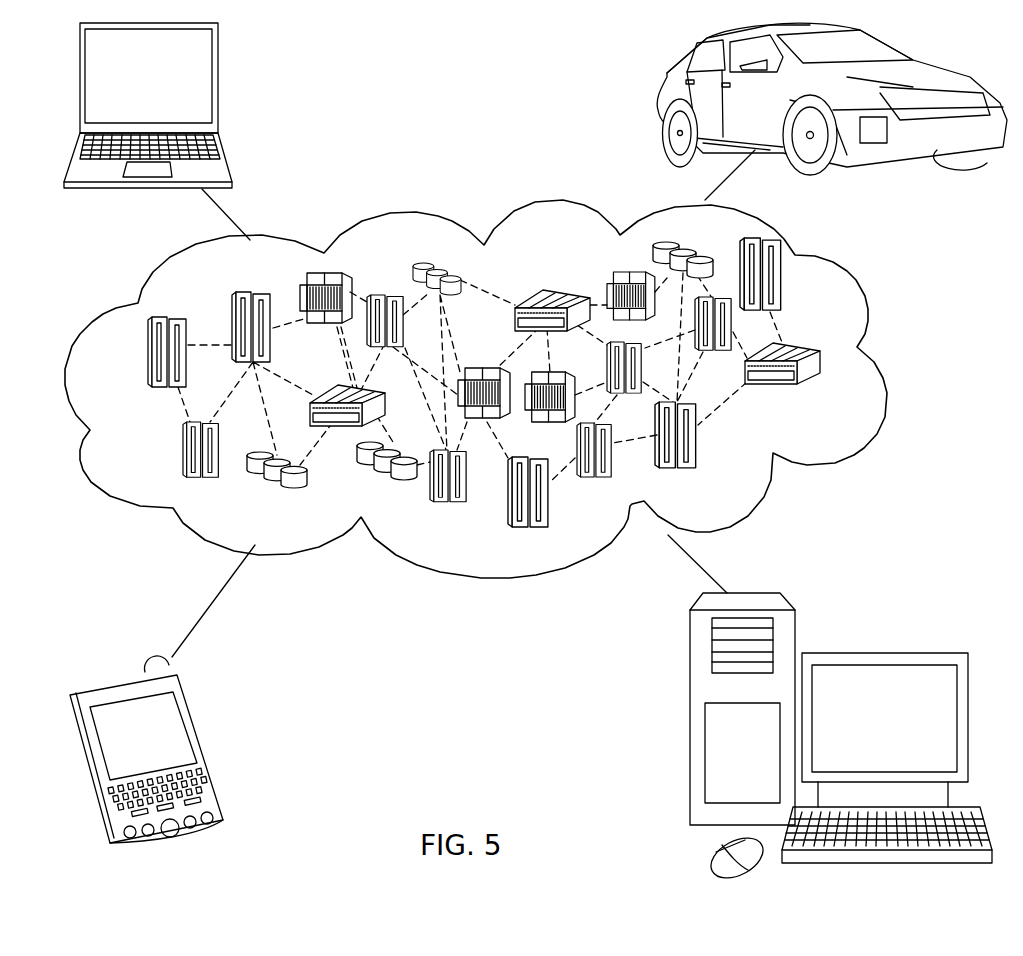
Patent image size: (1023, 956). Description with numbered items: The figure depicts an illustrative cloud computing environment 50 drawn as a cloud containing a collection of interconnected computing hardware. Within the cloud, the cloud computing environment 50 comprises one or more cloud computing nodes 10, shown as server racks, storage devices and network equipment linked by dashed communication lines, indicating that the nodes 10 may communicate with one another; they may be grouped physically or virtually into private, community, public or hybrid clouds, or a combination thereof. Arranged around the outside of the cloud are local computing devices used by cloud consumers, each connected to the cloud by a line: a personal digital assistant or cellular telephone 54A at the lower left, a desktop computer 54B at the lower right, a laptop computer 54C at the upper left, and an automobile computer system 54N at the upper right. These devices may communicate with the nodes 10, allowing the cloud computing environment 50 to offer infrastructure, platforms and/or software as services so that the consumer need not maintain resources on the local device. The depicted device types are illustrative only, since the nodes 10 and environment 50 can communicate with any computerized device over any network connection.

The cloud computing node 10 is at (822, 392).
The cloud computing environment 50 is at (882, 360).
The personal digital assistant or cellular telephone 54A is at (207, 750).
The desktop computer 54B is at (880, 653).
The laptop computer 54C is at (218, 85).
The automobile computer system 54N is at (662, 100).